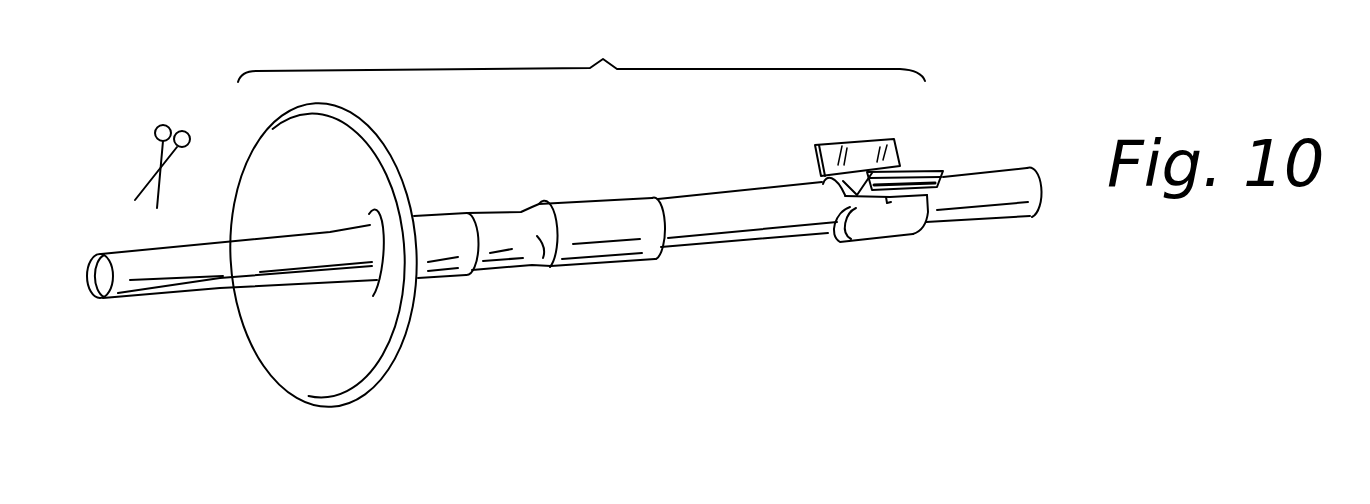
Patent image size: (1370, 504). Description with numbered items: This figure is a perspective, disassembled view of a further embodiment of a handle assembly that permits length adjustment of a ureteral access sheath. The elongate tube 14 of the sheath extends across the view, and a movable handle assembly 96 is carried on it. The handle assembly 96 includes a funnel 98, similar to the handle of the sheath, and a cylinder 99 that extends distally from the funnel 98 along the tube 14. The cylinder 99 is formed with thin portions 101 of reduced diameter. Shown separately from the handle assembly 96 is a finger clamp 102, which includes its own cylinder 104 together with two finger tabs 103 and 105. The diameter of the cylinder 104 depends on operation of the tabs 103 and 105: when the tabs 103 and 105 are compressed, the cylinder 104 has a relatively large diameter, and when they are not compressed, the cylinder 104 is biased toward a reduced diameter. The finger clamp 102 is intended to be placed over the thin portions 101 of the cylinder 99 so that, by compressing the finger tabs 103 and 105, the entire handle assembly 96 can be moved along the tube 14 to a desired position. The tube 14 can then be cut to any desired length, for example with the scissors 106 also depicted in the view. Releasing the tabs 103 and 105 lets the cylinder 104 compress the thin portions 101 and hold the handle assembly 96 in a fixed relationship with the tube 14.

The tube 14 is at (132, 278).
The movable handle assembly 96 is at (581, 50).
The funnel 98 is at (418, 170).
The cylinder 99 is at (612, 243).
The thin portions 101 is at (498, 233).
The finger clamp 102 is at (905, 213).
The finger tab 103 is at (838, 143).
The cylinder 104 is at (865, 215).
The finger tab 105 is at (937, 187).
The scissors 106 is at (153, 143).